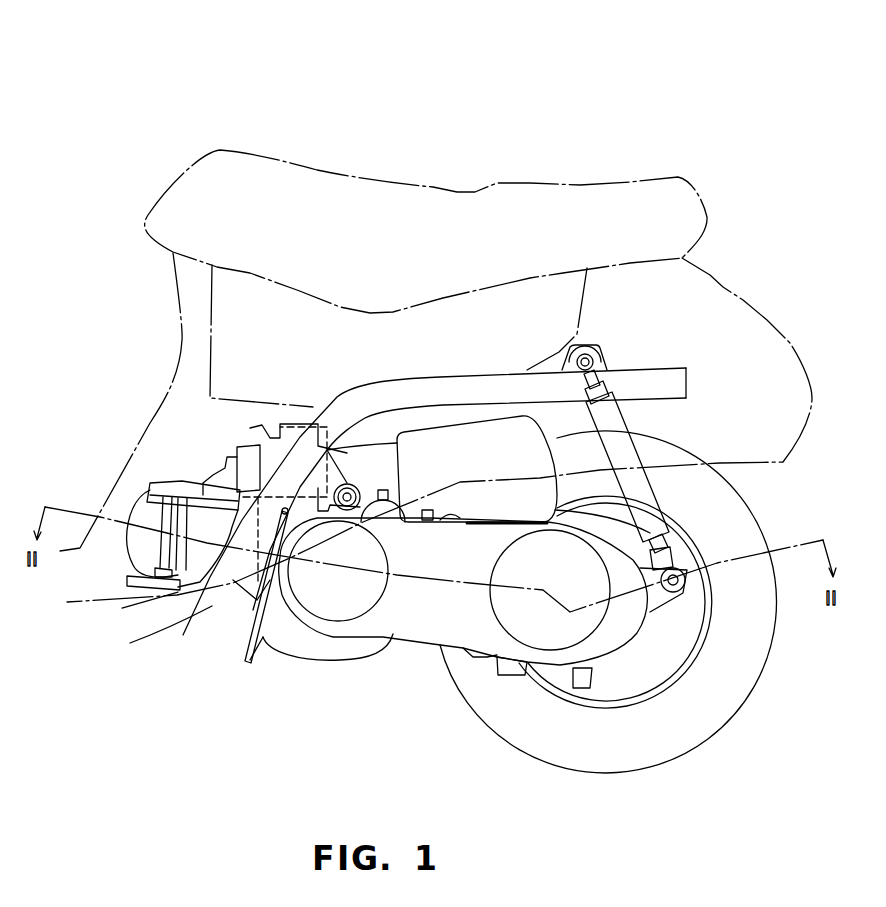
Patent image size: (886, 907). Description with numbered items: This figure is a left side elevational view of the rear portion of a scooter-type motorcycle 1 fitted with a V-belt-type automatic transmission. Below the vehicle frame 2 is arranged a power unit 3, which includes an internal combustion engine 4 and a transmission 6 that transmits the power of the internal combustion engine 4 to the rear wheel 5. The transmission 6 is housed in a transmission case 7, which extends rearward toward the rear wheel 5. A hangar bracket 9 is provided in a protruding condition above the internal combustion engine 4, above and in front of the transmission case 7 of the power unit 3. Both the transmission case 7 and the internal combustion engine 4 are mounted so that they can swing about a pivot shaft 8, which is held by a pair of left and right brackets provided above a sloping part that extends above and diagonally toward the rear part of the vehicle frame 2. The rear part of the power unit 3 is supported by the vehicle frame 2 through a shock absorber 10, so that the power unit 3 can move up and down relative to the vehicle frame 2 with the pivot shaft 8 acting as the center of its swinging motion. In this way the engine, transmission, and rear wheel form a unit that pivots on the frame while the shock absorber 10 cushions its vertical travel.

The scooter-type motorcycle 1 is at (652, 94).
The vehicle frame 2 is at (338, 401).
The power unit 3 is at (214, 653).
The internal combustion engine 4 is at (180, 461).
The rear wheel 5 is at (730, 695).
The transmission 6 is at (414, 650).
The transmission case 7 is at (397, 607).
The pivot shaft 8 is at (353, 483).
The hangar bracket 9 is at (352, 512).
The shock absorber 10 is at (625, 452).